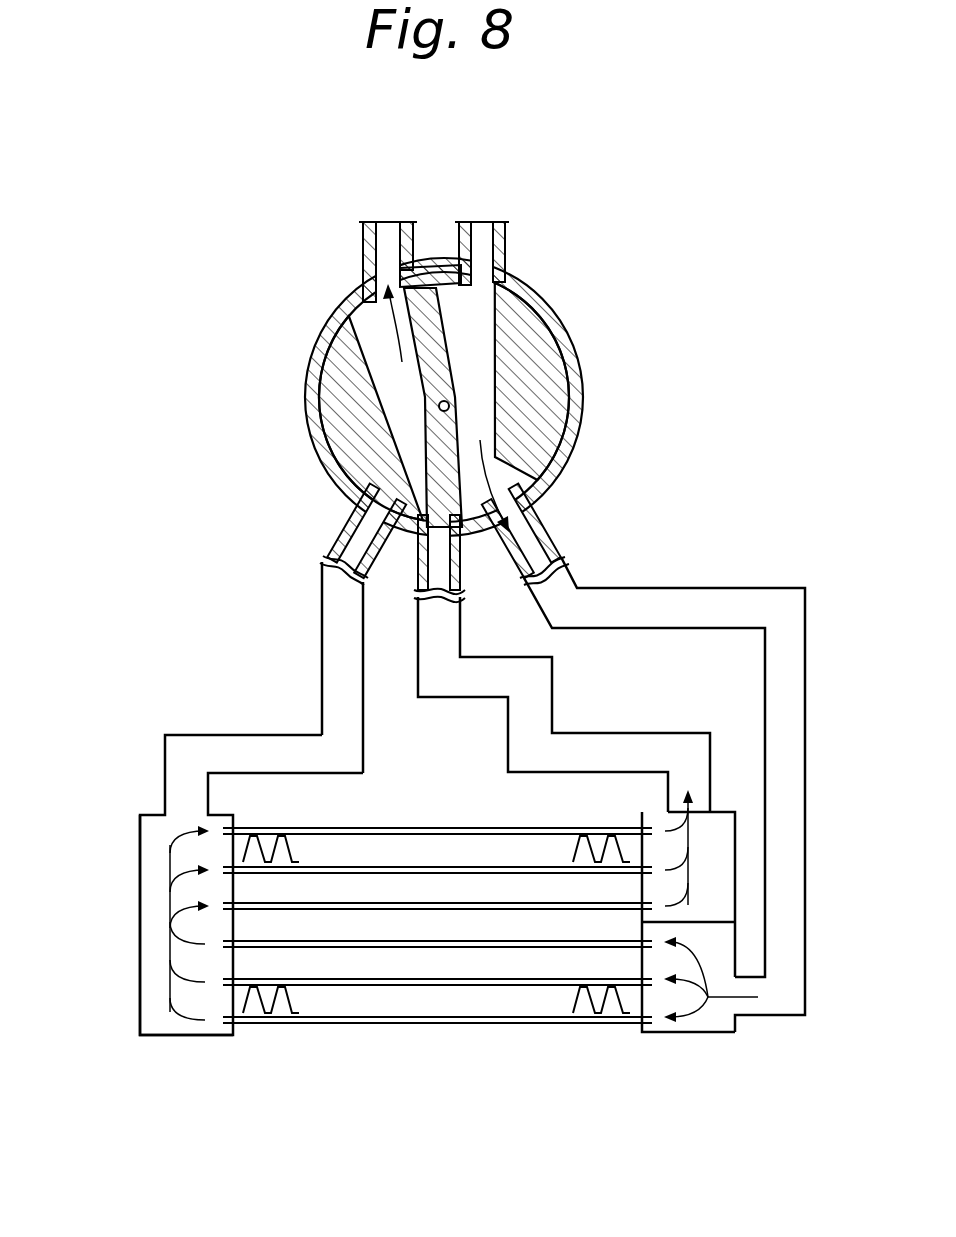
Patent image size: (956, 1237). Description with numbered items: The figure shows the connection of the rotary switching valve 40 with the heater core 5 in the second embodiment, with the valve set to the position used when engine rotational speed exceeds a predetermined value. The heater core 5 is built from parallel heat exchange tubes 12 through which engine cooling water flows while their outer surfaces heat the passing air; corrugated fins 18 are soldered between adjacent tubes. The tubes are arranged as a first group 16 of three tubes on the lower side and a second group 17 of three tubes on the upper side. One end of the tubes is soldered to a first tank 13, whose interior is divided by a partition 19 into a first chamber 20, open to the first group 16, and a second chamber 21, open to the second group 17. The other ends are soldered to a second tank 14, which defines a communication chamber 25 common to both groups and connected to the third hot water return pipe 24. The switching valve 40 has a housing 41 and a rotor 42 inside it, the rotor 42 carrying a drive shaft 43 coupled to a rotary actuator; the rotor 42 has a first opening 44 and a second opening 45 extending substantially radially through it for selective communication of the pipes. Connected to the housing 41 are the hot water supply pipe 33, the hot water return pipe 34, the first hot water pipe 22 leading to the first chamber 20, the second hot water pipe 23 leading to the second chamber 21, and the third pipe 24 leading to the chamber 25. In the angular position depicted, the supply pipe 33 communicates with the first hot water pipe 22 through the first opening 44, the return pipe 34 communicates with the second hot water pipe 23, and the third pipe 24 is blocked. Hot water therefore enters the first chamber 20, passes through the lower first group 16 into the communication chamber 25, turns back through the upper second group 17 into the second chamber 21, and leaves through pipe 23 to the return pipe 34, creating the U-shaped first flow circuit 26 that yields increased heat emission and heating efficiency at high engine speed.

The heater core 5 is at (147, 800).
The heat exchange tubes 12 is at (275, 1034).
The first tank 13 is at (735, 873).
The second tank 14 is at (140, 857).
The first group 16 is at (353, 950).
The second group 17 is at (374, 826).
The corrugated fins 18 is at (597, 1023).
The partition 19 is at (712, 917).
The first chamber 20 is at (717, 955).
The second chamber 21 is at (723, 828).
The first hot water pipe 22 is at (622, 599).
The second hot water pipe 23 is at (578, 746).
The third hot water return pipe 24 is at (352, 747).
The communication chamber 25 is at (147, 1008).
The first flow circuit 26 is at (167, 948).
The hot water supply pipe 33 is at (507, 243).
The hot water return pipe 34 is at (362, 240).
The switching valve 40 is at (574, 312).
The housing 41 is at (312, 364).
The rotor 42 is at (541, 450).
The drive shaft 43 is at (452, 406).
The first opening 44 is at (474, 367).
The second opening 45 is at (427, 448).